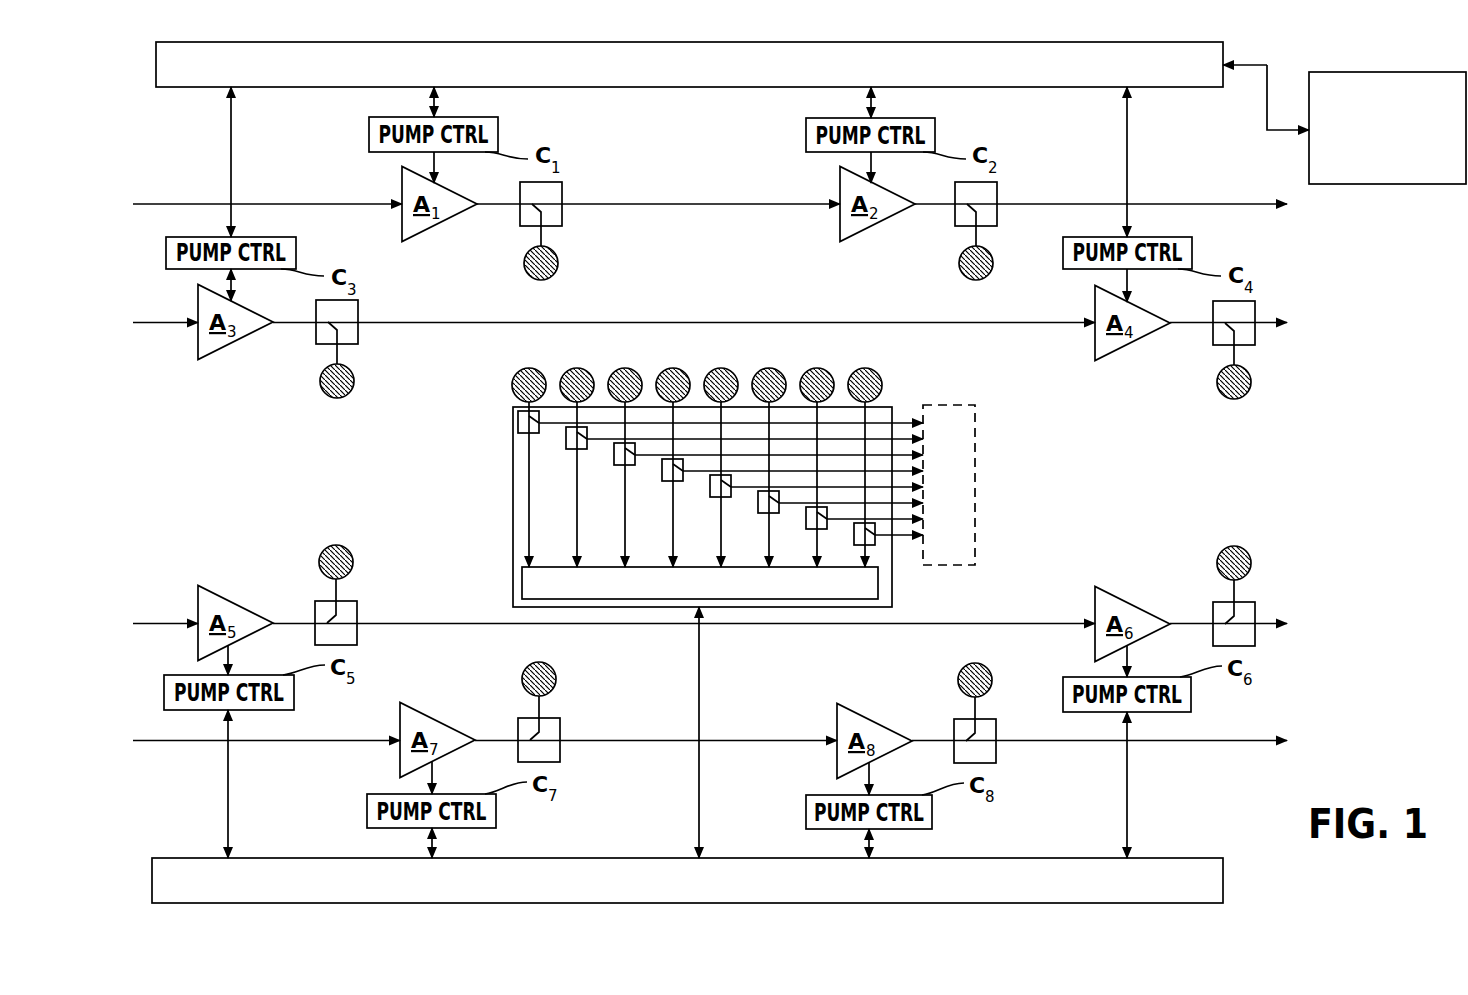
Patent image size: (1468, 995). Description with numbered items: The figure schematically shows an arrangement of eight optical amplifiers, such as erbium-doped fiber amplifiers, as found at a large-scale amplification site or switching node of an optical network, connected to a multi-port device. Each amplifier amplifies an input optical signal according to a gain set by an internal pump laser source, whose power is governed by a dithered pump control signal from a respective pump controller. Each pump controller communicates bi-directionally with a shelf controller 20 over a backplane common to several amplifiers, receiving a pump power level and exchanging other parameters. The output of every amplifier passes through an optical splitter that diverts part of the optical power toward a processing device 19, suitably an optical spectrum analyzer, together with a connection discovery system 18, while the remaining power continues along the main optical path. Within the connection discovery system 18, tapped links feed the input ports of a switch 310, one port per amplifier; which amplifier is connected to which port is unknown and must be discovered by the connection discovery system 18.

The shelf controller 20 is at (1344, 124).
The connection discovery system 18 is at (681, 504).
The processing device 19 is at (949, 485).
The switch 310 is at (700, 583).